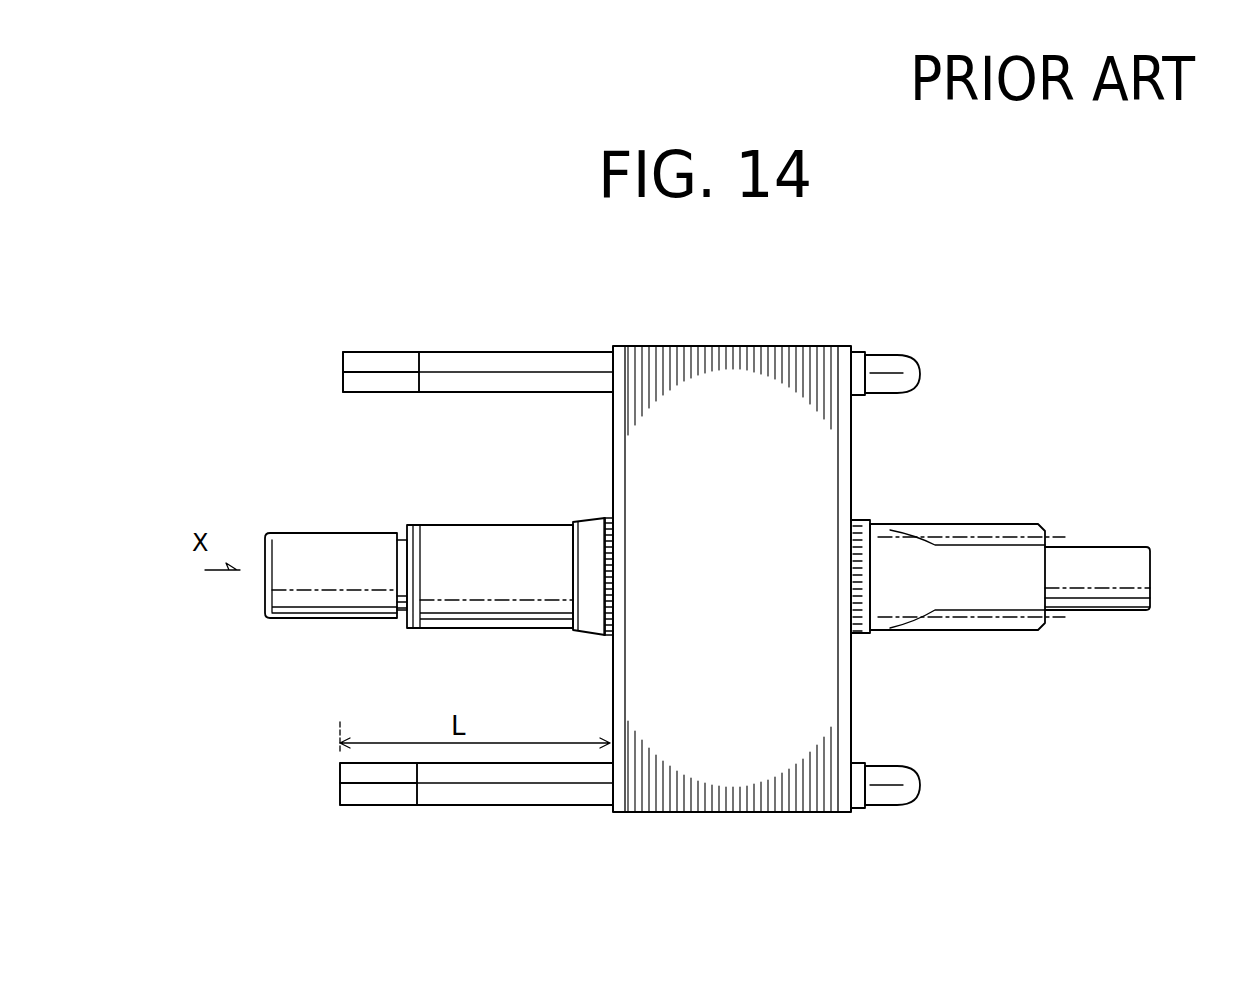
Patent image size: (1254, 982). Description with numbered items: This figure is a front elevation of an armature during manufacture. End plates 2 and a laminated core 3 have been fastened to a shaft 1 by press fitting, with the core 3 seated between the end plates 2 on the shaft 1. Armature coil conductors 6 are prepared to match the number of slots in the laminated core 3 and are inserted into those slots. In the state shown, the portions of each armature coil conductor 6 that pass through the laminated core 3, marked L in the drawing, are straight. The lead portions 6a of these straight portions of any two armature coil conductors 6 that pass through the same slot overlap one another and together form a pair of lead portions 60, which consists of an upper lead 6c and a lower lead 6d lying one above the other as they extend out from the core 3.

The shaft 1 is at (505, 610).
The end plates 2 is at (614, 808).
The laminated core 3 is at (689, 790).
The armature coil conductors 6 is at (466, 790).
The lead portions 6a is at (352, 390).
The upper lead 6c is at (405, 358).
The lower lead 6d is at (408, 385).
The pair of lead portions 60 is at (343, 372).